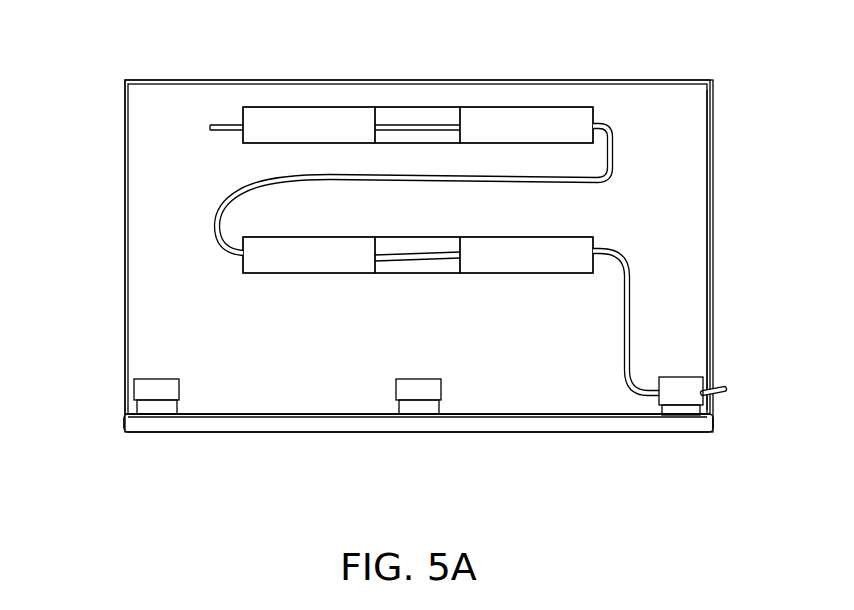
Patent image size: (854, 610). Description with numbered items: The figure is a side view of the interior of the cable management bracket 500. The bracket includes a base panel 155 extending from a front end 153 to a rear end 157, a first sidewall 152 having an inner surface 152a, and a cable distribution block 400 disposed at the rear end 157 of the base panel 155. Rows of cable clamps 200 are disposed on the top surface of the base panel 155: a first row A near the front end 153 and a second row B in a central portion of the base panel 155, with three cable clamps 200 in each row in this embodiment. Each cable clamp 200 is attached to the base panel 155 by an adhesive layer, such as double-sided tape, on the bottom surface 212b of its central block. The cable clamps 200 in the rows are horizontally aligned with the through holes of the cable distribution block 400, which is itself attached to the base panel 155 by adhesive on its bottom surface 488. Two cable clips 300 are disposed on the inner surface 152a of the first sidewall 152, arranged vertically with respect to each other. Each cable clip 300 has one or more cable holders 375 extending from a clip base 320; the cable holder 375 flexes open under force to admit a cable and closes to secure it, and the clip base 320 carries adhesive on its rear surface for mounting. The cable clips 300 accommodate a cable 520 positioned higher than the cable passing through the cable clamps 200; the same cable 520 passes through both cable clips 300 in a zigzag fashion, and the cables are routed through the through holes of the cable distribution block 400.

The cable management bracket 500 is at (123, 50).
The first sidewall 152 is at (196, 80).
The inner surface of first sidewall 152a is at (698, 251).
The front end of base panel 153 is at (120, 427).
The base panel 155 is at (190, 420).
The rear end of base panel 157 is at (717, 428).
The cable clamp 200 is at (155, 387).
The bottom surface of central block 212b is at (418, 417).
The cable clip 300 is at (314, 98).
The clip base 320 is at (421, 118).
The cable holder 375 is at (269, 131).
The cable distribution block 400 is at (683, 390).
The bottom surface of cable distribution block 488 is at (683, 418).
The cable 520 is at (613, 142).